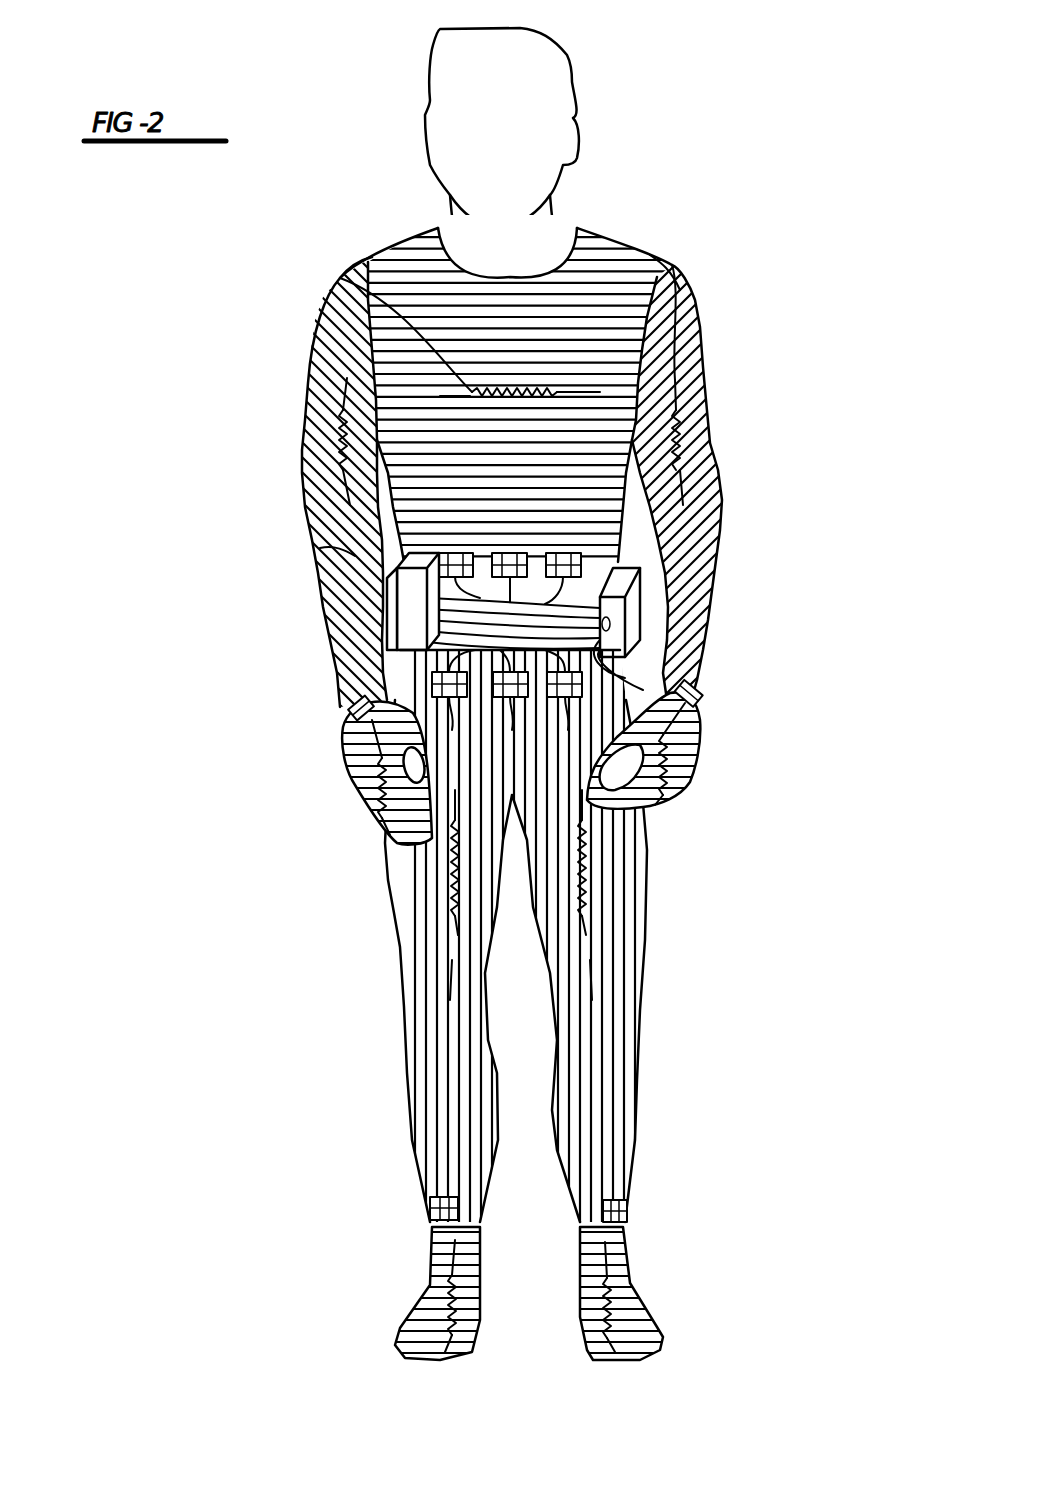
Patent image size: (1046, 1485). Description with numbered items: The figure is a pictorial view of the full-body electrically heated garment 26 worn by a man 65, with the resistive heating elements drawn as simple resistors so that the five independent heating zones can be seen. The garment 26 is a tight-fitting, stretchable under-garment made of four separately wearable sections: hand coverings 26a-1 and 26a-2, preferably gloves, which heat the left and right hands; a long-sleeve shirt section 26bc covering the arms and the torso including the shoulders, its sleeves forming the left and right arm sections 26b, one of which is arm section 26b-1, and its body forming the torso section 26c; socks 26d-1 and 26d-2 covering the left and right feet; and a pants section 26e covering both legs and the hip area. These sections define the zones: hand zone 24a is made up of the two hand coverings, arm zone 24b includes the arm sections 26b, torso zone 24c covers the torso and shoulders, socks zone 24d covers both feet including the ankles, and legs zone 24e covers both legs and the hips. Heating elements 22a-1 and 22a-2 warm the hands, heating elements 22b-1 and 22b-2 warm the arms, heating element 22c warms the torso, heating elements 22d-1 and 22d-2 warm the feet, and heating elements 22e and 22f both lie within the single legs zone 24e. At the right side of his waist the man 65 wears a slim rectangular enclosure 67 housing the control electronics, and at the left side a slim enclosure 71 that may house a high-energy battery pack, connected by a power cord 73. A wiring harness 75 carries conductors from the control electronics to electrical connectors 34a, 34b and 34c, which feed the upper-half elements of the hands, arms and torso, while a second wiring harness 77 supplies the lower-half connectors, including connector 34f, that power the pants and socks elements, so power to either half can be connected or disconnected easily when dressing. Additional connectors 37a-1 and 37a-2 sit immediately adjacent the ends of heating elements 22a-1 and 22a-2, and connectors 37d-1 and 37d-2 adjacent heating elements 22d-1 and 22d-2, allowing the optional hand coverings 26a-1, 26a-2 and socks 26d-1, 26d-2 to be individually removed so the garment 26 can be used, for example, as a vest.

The man 65 is at (592, 118).
The torso heating zone 24c is at (600, 237).
The arm heating zone 24b is at (300, 478).
The hand heating zone 24a is at (362, 818).
The socks heating zone 24d is at (487, 1320).
The legs heating zone 24e is at (393, 933).
The garment 26 is at (680, 247).
The long-sleeve shirt section 26bc is at (683, 272).
The arm section 26b-1 is at (688, 317).
The arm sections 26b is at (340, 548).
The torso section 26c is at (388, 265).
The hand covering 26a-1 is at (705, 802).
The hand covering 26a-2 is at (372, 808).
The pants section 26e is at (415, 1078).
The sock 26d-1 is at (660, 1332).
The sock 26d-2 is at (410, 1347).
The heating element 22c is at (340, 278).
The heating element 22b-1 is at (678, 410).
The heating element 22b-2 is at (340, 440).
The heating element 22a-1 is at (705, 748).
The heating element 22a-2 is at (378, 775).
The heating element 22e is at (580, 880).
The heating element 22f is at (452, 872).
The heating element 22d-1 is at (625, 1275).
The heating element 22d-2 is at (445, 1270).
The electrical connector 34a is at (455, 552).
The electrical connector 34b is at (512, 552).
The electrical connector 34c is at (565, 552).
The electrical connector 34f is at (507, 709).
The electrical connector 37a-1 is at (702, 695).
The electrical connector 37a-2 is at (352, 708).
The electrical connector 37d-1 is at (625, 1205).
The electrical connector 37d-2 is at (437, 1205).
The rectangular enclosure 67 is at (397, 628).
The enclosure 71 is at (632, 604).
The power cord 73 is at (643, 690).
The wiring harness 75 is at (387, 596).
The wiring harness 77 is at (440, 652).